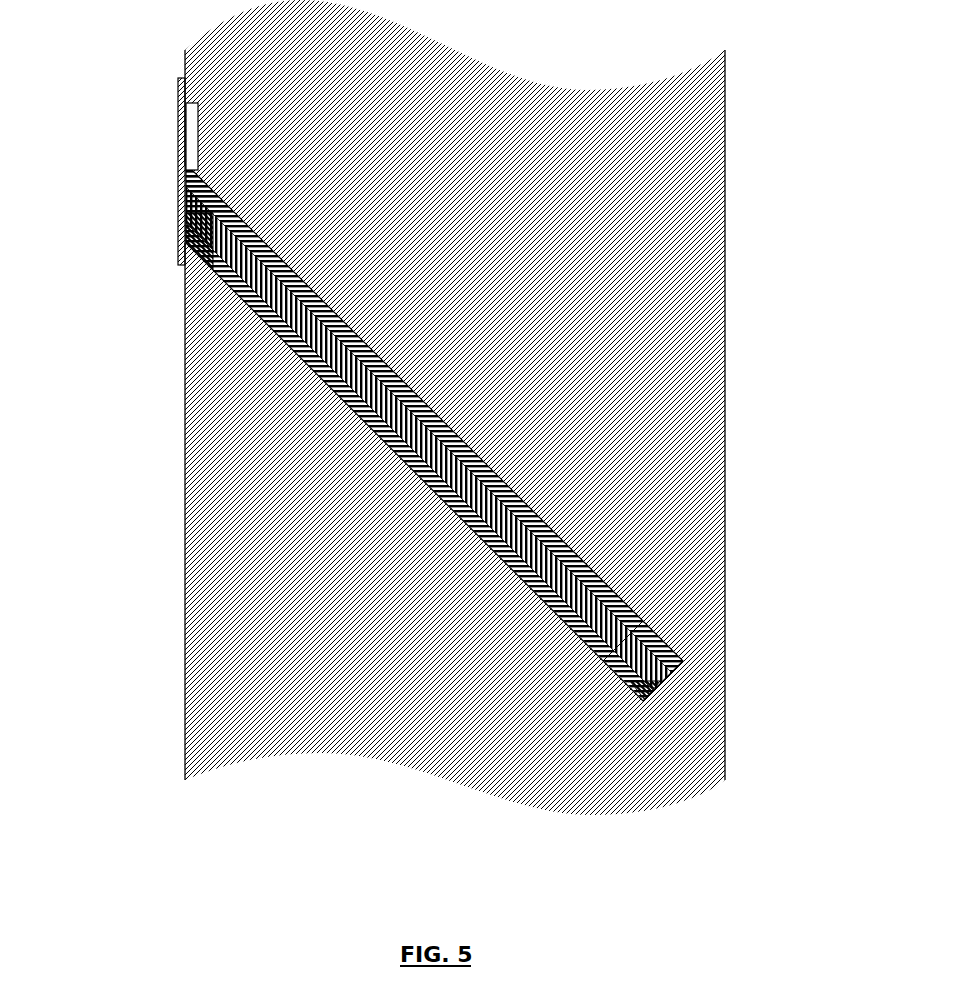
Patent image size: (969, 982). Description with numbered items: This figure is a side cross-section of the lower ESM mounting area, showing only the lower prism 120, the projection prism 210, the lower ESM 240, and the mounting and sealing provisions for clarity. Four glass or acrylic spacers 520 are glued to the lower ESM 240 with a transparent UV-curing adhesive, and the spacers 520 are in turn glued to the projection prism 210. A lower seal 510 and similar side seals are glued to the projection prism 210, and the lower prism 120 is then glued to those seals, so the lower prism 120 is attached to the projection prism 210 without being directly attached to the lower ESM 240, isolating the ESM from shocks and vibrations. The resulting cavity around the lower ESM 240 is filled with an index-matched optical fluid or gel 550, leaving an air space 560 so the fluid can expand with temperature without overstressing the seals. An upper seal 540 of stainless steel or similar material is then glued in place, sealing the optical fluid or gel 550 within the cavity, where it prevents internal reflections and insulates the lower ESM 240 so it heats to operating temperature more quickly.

The lower prism 120 is at (455, 407).
The projection prism 210 is at (342, 681).
The lower ESM 240 is at (550, 532).
The lower seal 510 is at (660, 745).
The glass or acrylic spacers 520 is at (217, 250).
The upper seal 540 is at (178, 150).
The optical fluid or gel 550 is at (186, 212).
The air space 560 is at (190, 130).